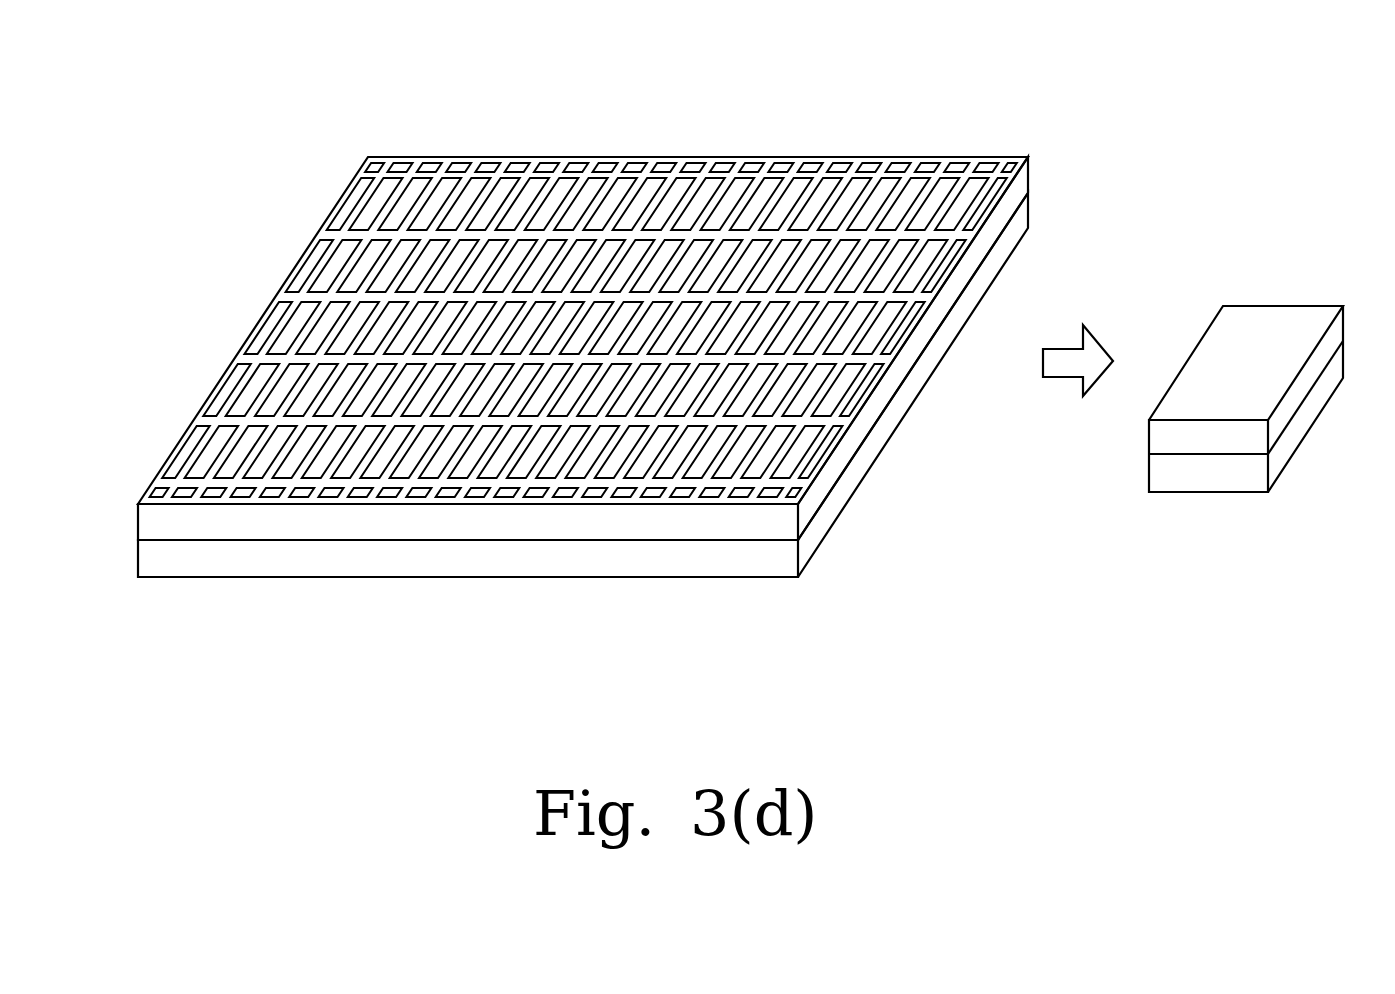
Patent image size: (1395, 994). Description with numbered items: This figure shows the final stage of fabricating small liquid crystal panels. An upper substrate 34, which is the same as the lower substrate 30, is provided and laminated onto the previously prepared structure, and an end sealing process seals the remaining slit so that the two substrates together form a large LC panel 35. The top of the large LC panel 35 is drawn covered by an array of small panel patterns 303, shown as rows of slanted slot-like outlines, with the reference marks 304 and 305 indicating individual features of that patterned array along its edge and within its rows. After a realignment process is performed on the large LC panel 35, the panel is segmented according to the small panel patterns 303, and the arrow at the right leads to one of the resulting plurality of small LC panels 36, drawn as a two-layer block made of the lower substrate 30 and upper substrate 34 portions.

The lower substrate 30 is at (162, 555).
The upper substrate 34 is at (153, 520).
The large LC panel 35 is at (197, 388).
The small panel patterns 303 is at (515, 255).
The edge slot 304 is at (985, 167).
The slot 305 is at (584, 335).
The small LC panels 36 is at (1390, 481).